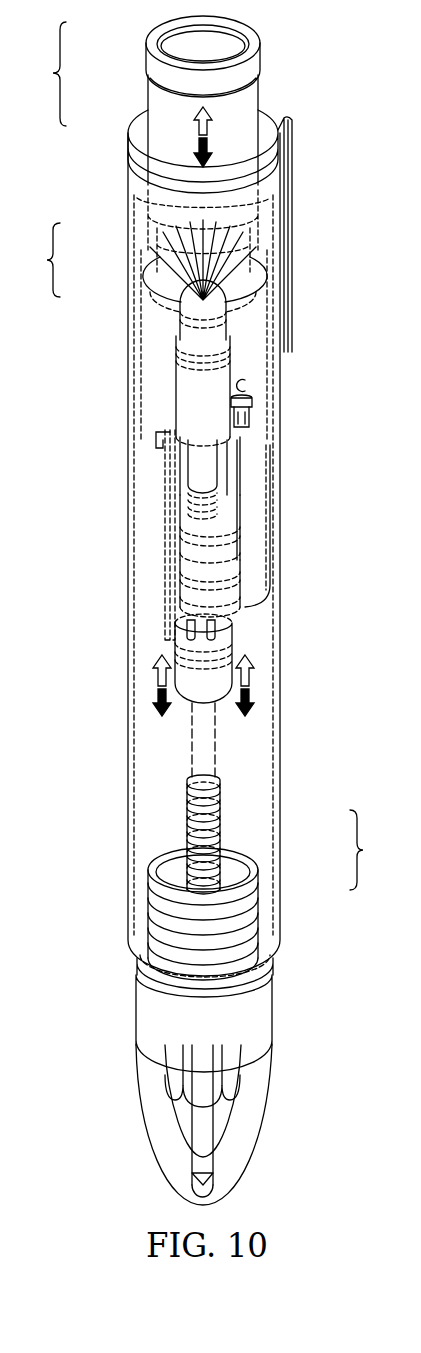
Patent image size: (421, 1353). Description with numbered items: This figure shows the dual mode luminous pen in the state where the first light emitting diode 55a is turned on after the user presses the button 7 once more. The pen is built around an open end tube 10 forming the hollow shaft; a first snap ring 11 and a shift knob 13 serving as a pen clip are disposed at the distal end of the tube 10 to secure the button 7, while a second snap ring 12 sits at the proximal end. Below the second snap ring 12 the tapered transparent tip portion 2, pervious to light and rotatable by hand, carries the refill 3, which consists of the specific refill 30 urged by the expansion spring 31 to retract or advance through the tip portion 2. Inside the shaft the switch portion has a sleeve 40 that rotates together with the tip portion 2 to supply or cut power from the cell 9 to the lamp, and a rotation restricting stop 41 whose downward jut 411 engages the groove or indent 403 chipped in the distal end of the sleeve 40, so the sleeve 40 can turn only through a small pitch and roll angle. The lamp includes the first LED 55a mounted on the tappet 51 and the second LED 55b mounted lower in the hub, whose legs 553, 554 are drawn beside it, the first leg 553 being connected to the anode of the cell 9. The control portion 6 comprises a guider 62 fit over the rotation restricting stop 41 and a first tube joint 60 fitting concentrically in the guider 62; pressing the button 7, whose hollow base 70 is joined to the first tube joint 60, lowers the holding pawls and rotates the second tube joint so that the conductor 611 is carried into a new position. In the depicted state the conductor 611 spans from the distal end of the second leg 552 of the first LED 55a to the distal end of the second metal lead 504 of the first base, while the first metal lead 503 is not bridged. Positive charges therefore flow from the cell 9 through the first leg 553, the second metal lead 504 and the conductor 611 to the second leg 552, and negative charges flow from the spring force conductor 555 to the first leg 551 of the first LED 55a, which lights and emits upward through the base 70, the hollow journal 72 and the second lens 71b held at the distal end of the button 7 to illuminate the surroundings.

The tapered transparent tip portion 2 is at (258, 1044).
The refill 3 is at (363, 850).
The control portion 6 is at (44, 260).
The button 7 is at (48, 74).
The cell 9 is at (178, 574).
The open end tube 10 is at (133, 819).
The first snap ring 11 is at (270, 146).
The second snap ring 12 is at (145, 962).
The shift knob 13 is at (278, 122).
The specific refill 30 is at (222, 868).
The expansion spring 31 is at (222, 812).
The sleeve 40 is at (150, 764).
The rotation restricting stop 41 is at (264, 368).
The tappet 51 is at (185, 399).
The first light emitting diode 55a is at (218, 330).
The second LED 55b is at (240, 658).
The first tube joint 60 is at (165, 262).
The guider 62 is at (165, 297).
The base 70 is at (150, 117).
The second lens 71b is at (152, 42).
The hollow journal 72 is at (150, 60).
The groove or indent 403 is at (178, 514).
The jut 411 is at (178, 546).
The first metal lead 503 is at (170, 480).
The second metal lead 504 is at (250, 425).
The first leg 551 is at (160, 432).
The second leg 552 is at (252, 402).
The first leg 553 is at (220, 624).
The lug 554 is at (187, 624).
The spring force conductor 555 is at (270, 506).
The conductor 611 is at (246, 390).